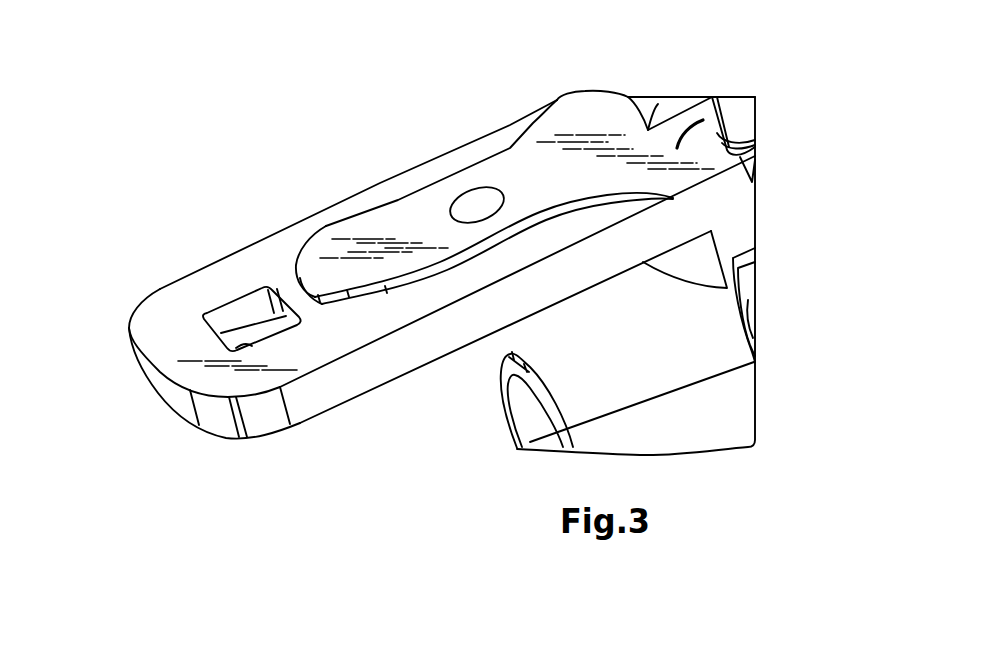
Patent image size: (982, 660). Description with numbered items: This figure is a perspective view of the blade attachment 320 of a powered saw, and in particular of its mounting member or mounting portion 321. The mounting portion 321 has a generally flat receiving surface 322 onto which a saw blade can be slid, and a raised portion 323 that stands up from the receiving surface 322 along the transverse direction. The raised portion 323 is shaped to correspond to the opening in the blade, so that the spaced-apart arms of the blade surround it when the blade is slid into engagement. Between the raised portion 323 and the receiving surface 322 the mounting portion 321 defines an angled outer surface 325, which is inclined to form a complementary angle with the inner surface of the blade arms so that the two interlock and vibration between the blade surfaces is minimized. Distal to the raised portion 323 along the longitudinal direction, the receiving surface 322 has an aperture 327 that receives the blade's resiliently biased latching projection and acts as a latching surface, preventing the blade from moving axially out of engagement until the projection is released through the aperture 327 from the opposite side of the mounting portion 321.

The blade attachment 320 is at (150, 241).
The mounting portion 321 is at (227, 255).
The receiving surface 322 is at (292, 237).
The raised portion 323 is at (377, 225).
The outer surface 325 is at (452, 264).
The aperture 327 is at (274, 326).